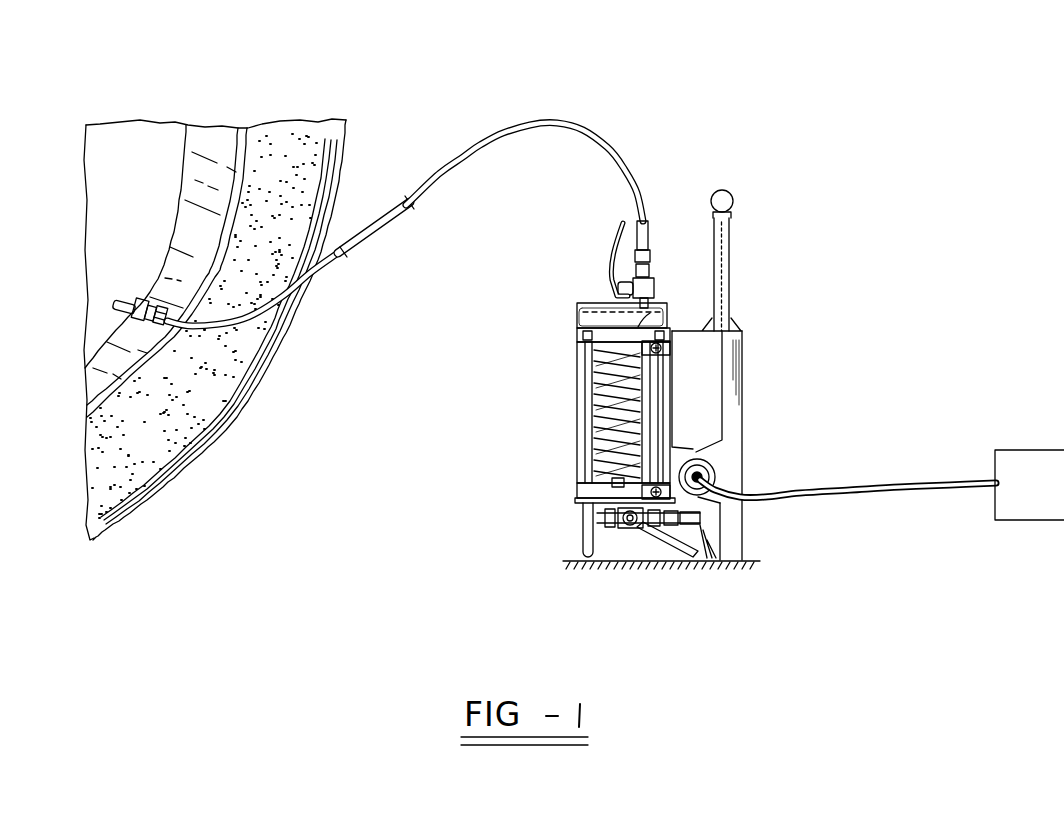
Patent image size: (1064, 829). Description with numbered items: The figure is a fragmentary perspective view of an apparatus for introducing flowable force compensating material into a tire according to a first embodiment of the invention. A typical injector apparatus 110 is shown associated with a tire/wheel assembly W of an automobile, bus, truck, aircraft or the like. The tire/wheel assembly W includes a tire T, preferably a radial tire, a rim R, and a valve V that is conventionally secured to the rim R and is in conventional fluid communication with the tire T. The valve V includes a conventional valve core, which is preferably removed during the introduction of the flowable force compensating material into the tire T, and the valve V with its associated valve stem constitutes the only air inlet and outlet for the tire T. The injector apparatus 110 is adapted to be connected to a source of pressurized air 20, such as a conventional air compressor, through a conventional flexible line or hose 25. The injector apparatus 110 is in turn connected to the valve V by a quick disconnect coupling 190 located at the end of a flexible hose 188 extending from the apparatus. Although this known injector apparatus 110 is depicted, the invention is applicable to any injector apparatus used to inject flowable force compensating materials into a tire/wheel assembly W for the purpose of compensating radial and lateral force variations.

The tire/wheel assembly W is at (142, 110).
The rim R is at (207, 130).
The tire T is at (302, 130).
The valve V is at (124, 298).
The quick disconnect coupling 190 is at (142, 337).
The flexible hose 188 is at (340, 256).
The injector apparatus 110 is at (553, 380).
The flexible line or hose 25 is at (832, 496).
The source of pressurized air 20 is at (1058, 503).